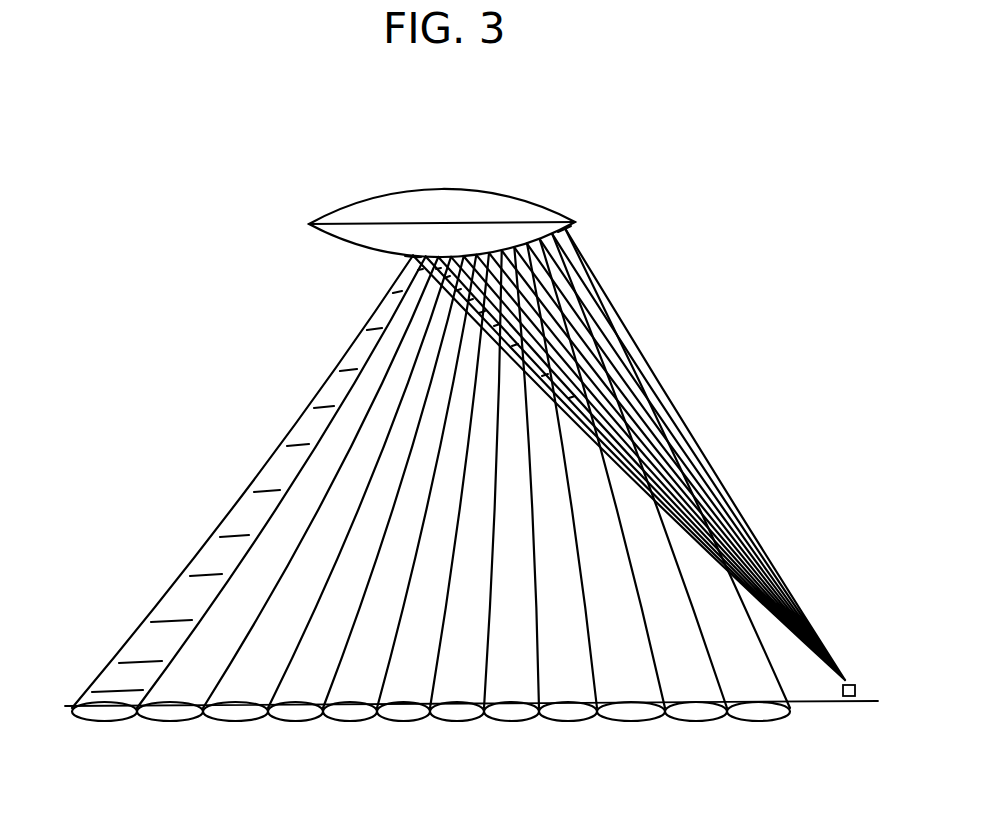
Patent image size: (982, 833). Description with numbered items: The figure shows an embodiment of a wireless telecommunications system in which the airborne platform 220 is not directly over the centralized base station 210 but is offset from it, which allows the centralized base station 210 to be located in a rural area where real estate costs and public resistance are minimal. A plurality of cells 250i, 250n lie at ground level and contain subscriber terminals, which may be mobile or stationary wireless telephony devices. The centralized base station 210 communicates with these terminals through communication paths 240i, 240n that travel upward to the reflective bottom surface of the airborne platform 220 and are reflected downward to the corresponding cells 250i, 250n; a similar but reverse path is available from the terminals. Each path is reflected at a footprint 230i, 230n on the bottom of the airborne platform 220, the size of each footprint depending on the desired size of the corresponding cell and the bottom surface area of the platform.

The centralized base station 210 is at (842, 680).
The airborne platform 220 is at (463, 190).
The footprint 230i is at (413, 258).
The footprint 230n is at (566, 230).
The communication path 240i is at (285, 413).
The communication path 240n is at (776, 676).
The cell 250i is at (108, 721).
The cell 250n is at (786, 716).